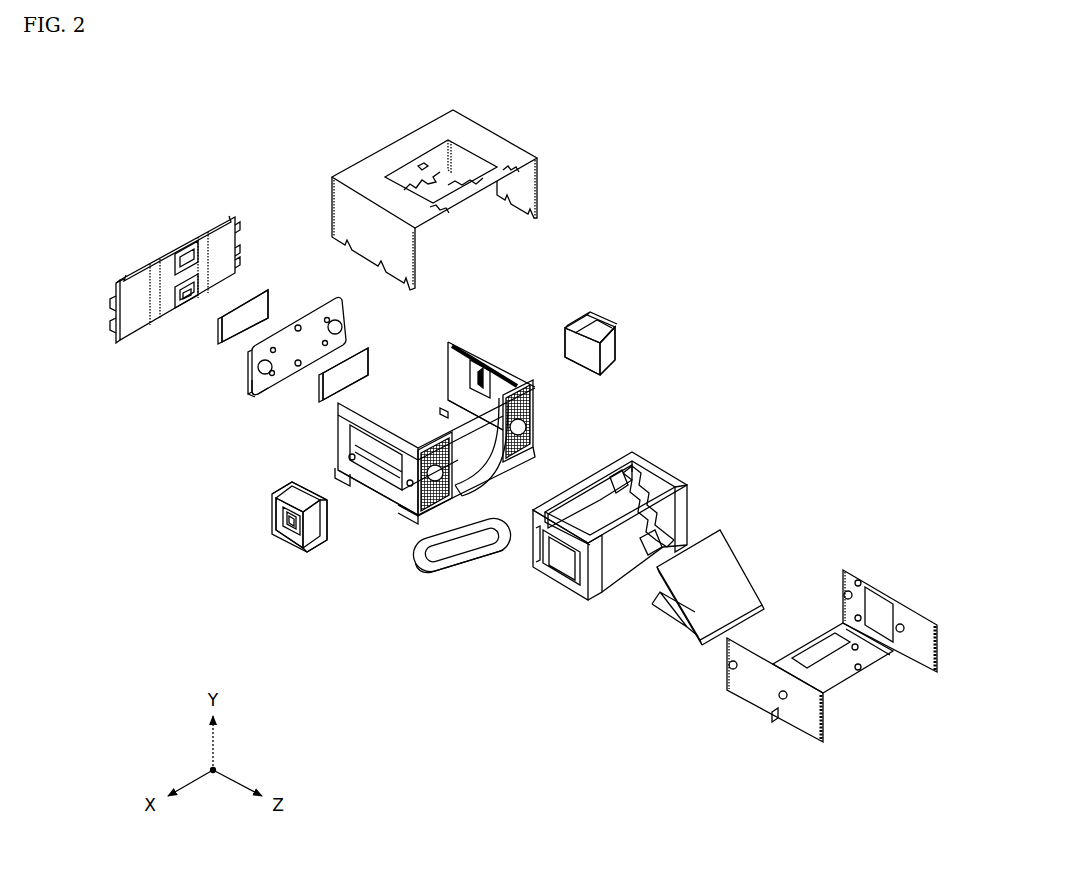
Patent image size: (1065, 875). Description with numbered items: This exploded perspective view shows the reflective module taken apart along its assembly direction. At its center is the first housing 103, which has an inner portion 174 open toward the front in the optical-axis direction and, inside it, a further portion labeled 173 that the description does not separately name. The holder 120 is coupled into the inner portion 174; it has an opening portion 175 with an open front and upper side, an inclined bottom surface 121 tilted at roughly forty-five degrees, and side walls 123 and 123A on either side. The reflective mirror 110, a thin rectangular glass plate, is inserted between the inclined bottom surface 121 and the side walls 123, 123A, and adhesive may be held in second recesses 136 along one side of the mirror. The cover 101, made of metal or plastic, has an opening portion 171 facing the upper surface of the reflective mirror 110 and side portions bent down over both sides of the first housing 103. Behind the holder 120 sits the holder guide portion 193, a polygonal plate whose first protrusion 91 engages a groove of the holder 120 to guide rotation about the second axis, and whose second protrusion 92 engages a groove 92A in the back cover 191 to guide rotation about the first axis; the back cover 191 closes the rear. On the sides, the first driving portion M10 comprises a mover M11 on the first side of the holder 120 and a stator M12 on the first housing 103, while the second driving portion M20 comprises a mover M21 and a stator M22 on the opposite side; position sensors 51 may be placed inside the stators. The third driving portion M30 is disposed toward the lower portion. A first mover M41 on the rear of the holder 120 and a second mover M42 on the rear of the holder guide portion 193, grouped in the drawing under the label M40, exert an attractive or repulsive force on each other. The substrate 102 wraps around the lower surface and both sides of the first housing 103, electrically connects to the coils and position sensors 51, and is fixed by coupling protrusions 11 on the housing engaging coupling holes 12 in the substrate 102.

The cover 101 is at (420, 135).
The opening portion 171 is at (470, 150).
The back cover 191 is at (148, 265).
The groove 92A is at (188, 306).
The second protrusion 92 is at (293, 320).
The first protrusion 91 is at (264, 375).
The holder guide portion 193 is at (254, 380).
The first mover M41 is at (355, 348).
The second mover M42 is at (226, 328).
The pad module M40 is at (158, 590).
The coupling protrusion 11 is at (397, 498).
The first housing 103 is at (458, 352).
The inner portion 174 is at (482, 356).
The curved bracket 173 is at (488, 465).
The second driving portion M20 is at (637, 252).
The mover M21 is at (567, 320).
The stator M22 is at (600, 318).
The first driving portion M10 is at (201, 472).
The mover M11 is at (287, 488).
The stator M12 is at (278, 516).
The position sensor 51 is at (282, 530).
The third driving portion M30 is at (440, 578).
The holder 120 is at (680, 470).
The side wall 123A is at (694, 482).
The inclined bottom surface 121 is at (597, 500).
The second recess 136 is at (644, 462).
The opening portion 175 is at (657, 478).
The side wall 123 is at (562, 548).
The reflective mirror 110 is at (724, 537).
The substrate 102 is at (848, 572).
The coupling hole 12 is at (780, 700).